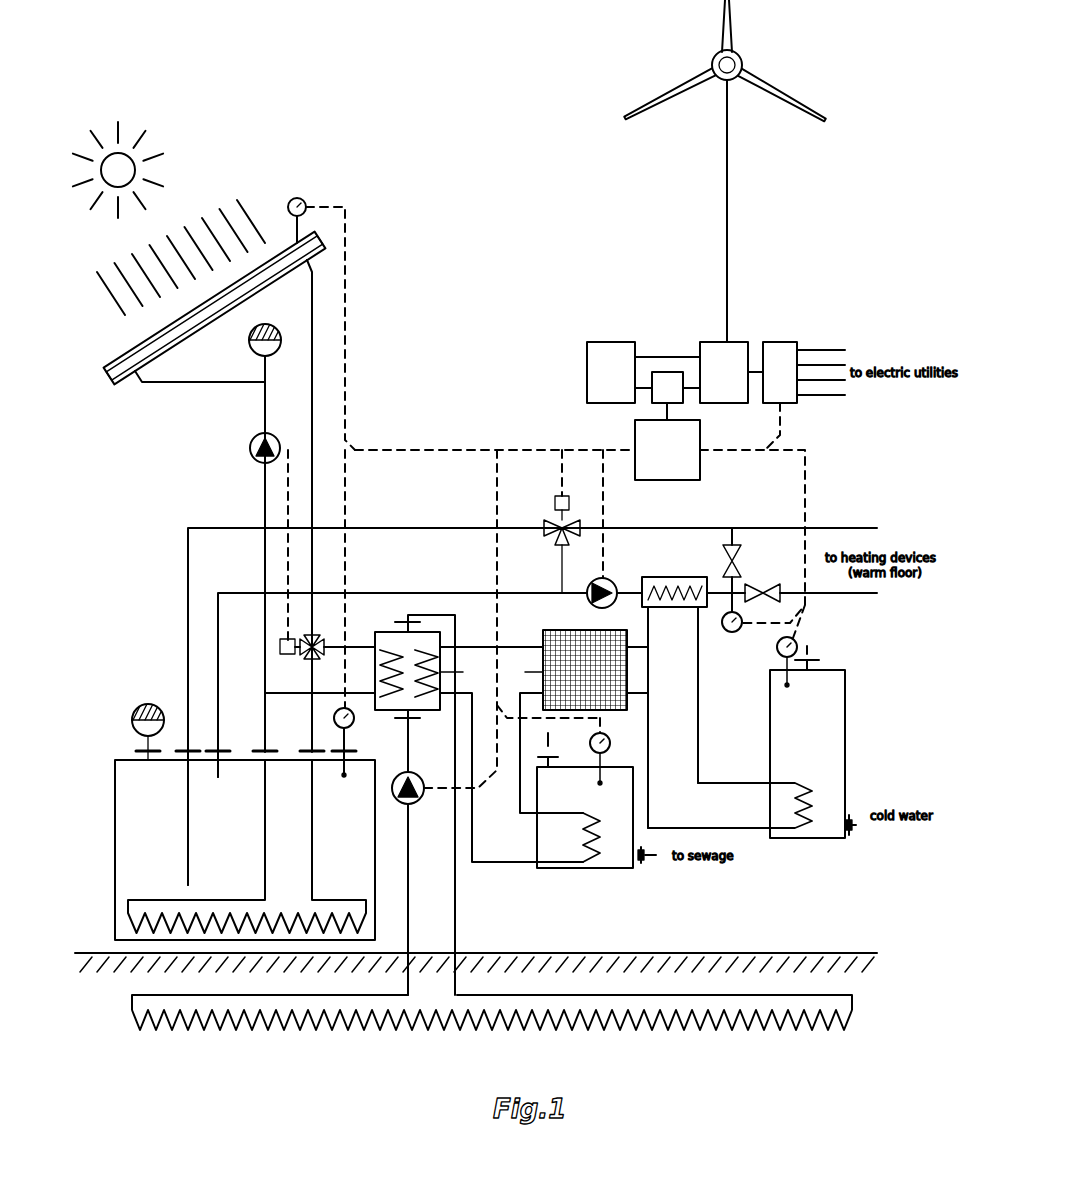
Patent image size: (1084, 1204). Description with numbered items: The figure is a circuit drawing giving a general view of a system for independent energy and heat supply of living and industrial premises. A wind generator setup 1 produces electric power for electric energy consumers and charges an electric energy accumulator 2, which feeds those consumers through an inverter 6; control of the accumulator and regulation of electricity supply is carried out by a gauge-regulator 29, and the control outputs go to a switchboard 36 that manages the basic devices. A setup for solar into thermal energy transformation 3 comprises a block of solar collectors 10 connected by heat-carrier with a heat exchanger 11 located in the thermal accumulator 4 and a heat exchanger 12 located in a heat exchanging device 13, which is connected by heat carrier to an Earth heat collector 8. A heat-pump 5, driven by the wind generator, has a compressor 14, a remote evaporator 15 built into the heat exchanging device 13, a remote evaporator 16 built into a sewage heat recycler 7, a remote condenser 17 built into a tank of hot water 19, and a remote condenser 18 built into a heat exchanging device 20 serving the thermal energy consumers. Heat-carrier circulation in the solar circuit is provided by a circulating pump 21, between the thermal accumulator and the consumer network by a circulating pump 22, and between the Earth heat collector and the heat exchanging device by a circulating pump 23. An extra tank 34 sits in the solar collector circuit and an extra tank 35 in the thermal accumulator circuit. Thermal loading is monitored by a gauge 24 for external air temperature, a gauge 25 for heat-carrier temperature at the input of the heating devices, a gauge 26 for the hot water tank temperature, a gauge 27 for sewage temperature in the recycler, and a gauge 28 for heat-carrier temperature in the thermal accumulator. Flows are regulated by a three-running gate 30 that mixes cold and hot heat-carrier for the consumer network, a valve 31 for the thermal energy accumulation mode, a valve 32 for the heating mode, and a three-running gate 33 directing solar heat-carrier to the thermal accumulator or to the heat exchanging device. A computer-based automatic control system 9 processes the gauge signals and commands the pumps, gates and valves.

The wind generator setup 1 is at (745, 52).
The electric energy accumulator 2 is at (598, 340).
The setup for solar into thermal energy transformation 3 is at (270, 248).
The thermal accumulator 4 is at (128, 838).
The heat-pump 5 is at (632, 680).
The inverter 6 is at (667, 372).
The sewage heat recycler 7 is at (620, 800).
The Earth heat collector 8 is at (420, 1008).
The automatic control system 9 is at (703, 470).
The block of solar collectors 10 is at (112, 358).
The heat exchanger 11 is at (135, 915).
The heat exchanger 12 is at (390, 645).
The heat exchanging device 13 is at (420, 637).
The compressor 14 is at (521, 672).
The remote evaporator 15 is at (465, 672).
The remote evaporator 16 is at (598, 857).
The remote condenser 17 is at (818, 800).
The remote condenser 18 is at (655, 607).
The tank of hot water 19 is at (822, 745).
The heat exchanging device 20 is at (655, 577).
The circulating pump 21 is at (250, 440).
The circulating pump 22 is at (590, 600).
The circulating pump 23 is at (414, 804).
The gauge for external air temperature 24 is at (302, 198).
The gauge for heat-carrier temperature at input of heating devices 25 is at (735, 636).
The gauge for temperature of tank of hot water 26 is at (797, 640).
The gauge for sewage temperature 27 is at (612, 738).
The gauge for heat-carrier temperature in thermal accumulator 28 is at (354, 724).
The gauge-regulator 29 is at (710, 342).
The three-running gate 30 is at (550, 515).
The valve for thermal energy accumulation mode inclusion 31 is at (740, 545).
The valve for heating mode inclusion 32 is at (760, 585).
The three-running gate 33 is at (300, 635).
The extra tank 34 is at (265, 324).
The extra tank 35 is at (135, 705).
The switchboard 36 is at (787, 342).